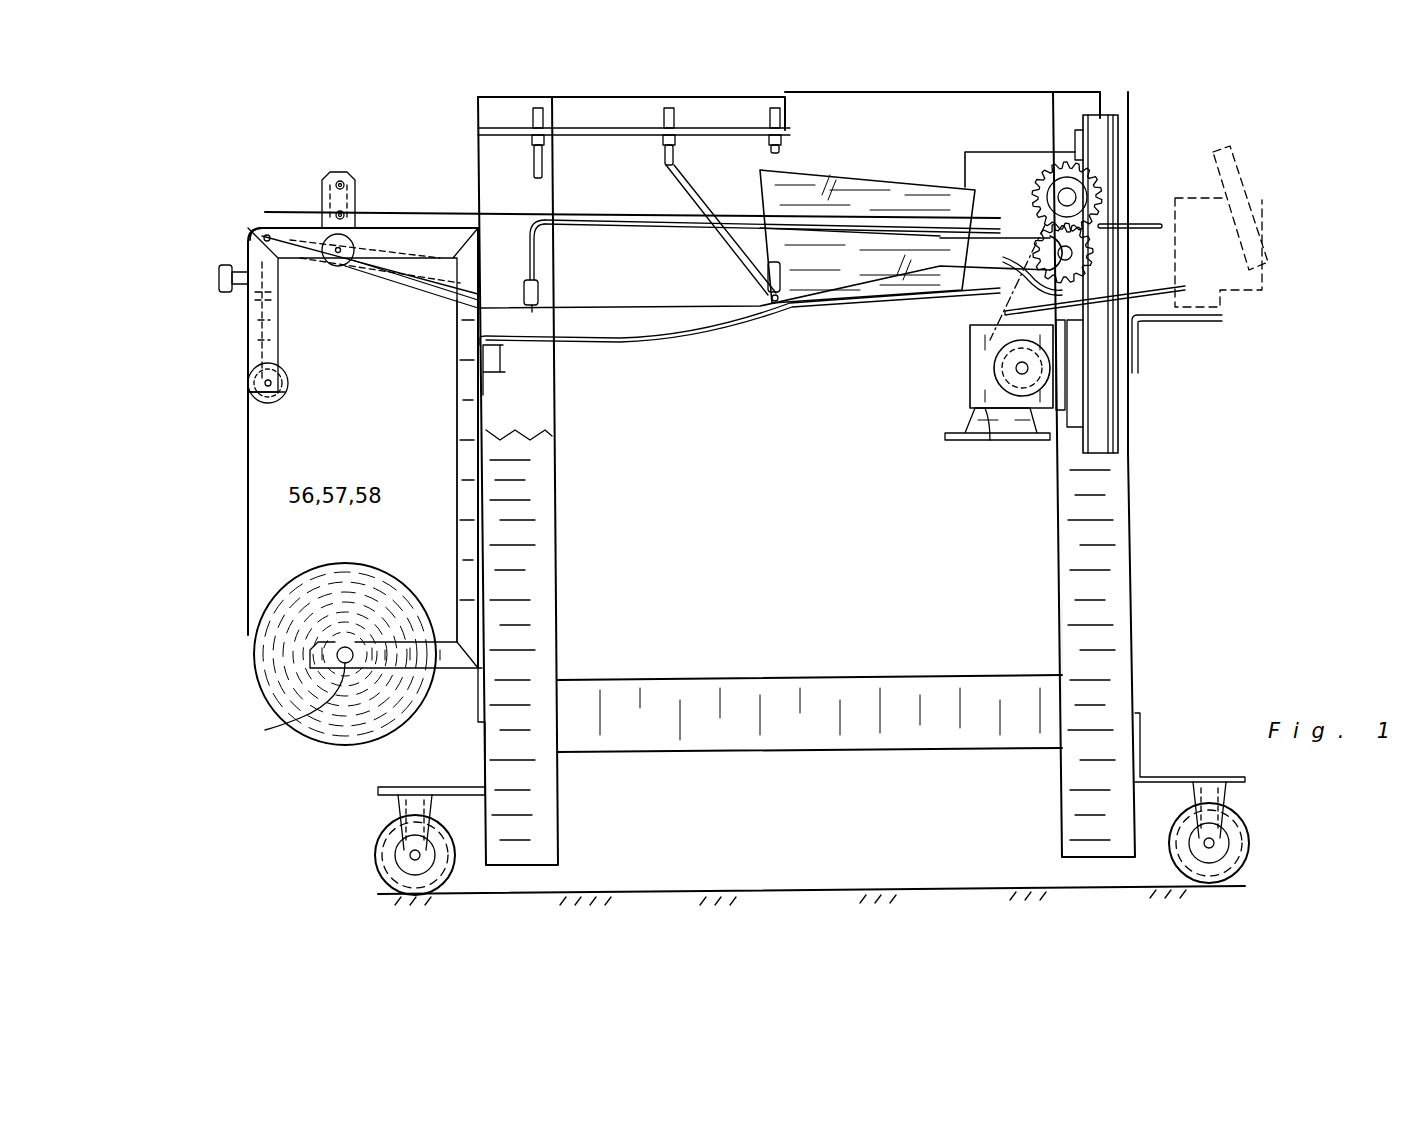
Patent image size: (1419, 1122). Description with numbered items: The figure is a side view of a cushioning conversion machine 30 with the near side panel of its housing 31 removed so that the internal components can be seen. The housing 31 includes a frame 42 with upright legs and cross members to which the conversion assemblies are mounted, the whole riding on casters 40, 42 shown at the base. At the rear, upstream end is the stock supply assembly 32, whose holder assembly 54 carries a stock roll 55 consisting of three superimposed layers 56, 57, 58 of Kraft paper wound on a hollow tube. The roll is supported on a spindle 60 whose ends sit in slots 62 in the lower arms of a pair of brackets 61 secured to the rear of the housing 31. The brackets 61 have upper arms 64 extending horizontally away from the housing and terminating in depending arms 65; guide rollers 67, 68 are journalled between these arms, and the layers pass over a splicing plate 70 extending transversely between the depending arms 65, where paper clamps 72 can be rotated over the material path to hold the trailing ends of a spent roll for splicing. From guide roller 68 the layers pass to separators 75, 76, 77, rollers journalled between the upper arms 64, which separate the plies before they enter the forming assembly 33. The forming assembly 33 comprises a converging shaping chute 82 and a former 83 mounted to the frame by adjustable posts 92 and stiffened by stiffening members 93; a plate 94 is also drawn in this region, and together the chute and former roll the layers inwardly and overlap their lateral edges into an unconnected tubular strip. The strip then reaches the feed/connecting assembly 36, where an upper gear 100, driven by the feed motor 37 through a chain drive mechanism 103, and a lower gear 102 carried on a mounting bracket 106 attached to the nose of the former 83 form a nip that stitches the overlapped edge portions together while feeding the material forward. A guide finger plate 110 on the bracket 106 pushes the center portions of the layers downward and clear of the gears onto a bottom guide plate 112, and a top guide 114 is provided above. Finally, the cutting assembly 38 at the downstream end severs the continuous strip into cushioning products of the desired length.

The cushioning conversion machine 30 is at (1168, 437).
The housing 31 is at (1135, 580).
The stock supply assembly 32 is at (297, 138).
The forming assembly 33 is at (775, 345).
The feed/connecting assembly 36 is at (1020, 135).
The feed motor 37 is at (1005, 285).
The cutting assembly 38 is at (1270, 318).
The caster wheel 40 is at (415, 845).
The frame 42 is at (1135, 637).
The holder assembly 54 is at (295, 760).
The stock roll 55 is at (395, 568).
The layer 56 is at (400, 275).
The layer 57 is at (415, 285).
The layer 58 is at (440, 290).
The spindle 60 is at (272, 727).
The brackets 61 is at (457, 425).
The slots 62 is at (345, 647).
The upper arms 64 is at (405, 225).
The depending arms 65 is at (285, 385).
The guide roller 67 is at (278, 400).
The guide roller 68 is at (262, 228).
The splicing plate 70 is at (255, 345).
The paper clamps 72 is at (222, 275).
The separator 75 is at (340, 185).
The separator 76 is at (340, 215).
The separator 77 is at (345, 262).
The shaping chute 82 is at (880, 300).
The former 83 is at (540, 262).
The adjustable posts 92 is at (540, 150).
The stiffening members 93 is at (745, 255).
The plate 94 is at (845, 270).
The upper gear 100 is at (1080, 165).
The lower gear 102 is at (1085, 330).
The chain drive mechanism 103 is at (995, 400).
The mounting bracket 106 is at (975, 300).
The guide finger plate 110 is at (1005, 315).
The bottom guide plate 112 is at (1135, 330).
The top guide 114 is at (1095, 170).